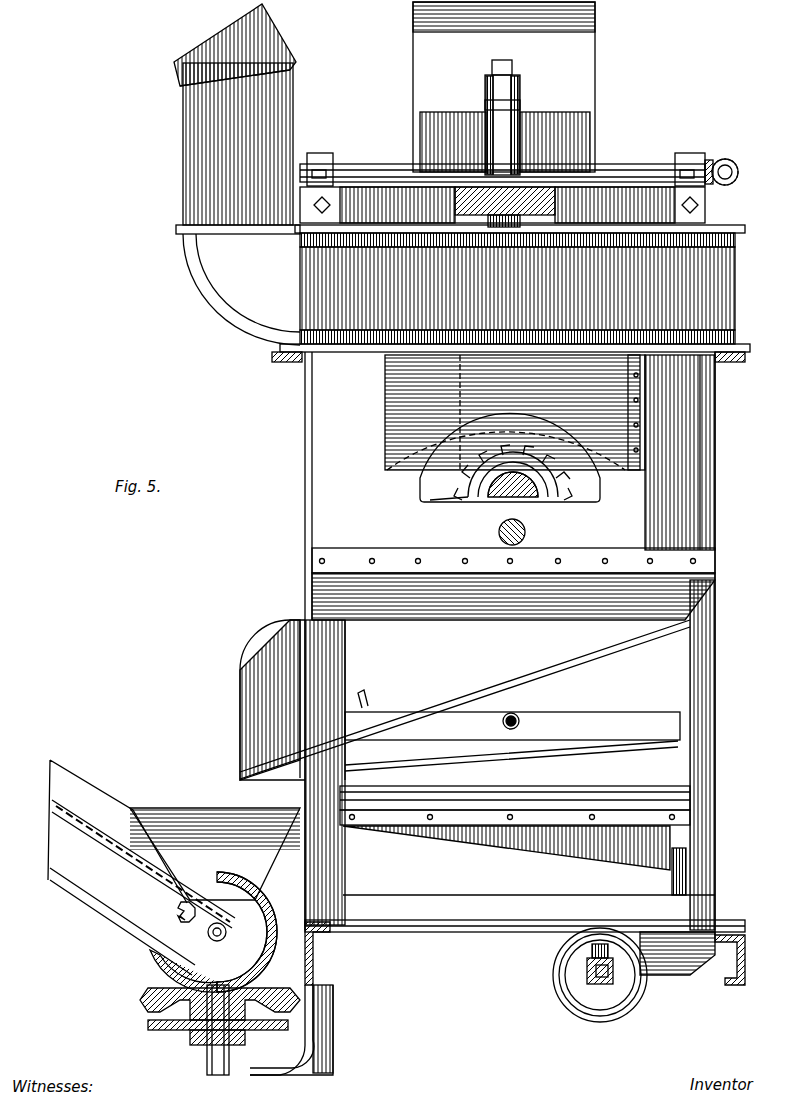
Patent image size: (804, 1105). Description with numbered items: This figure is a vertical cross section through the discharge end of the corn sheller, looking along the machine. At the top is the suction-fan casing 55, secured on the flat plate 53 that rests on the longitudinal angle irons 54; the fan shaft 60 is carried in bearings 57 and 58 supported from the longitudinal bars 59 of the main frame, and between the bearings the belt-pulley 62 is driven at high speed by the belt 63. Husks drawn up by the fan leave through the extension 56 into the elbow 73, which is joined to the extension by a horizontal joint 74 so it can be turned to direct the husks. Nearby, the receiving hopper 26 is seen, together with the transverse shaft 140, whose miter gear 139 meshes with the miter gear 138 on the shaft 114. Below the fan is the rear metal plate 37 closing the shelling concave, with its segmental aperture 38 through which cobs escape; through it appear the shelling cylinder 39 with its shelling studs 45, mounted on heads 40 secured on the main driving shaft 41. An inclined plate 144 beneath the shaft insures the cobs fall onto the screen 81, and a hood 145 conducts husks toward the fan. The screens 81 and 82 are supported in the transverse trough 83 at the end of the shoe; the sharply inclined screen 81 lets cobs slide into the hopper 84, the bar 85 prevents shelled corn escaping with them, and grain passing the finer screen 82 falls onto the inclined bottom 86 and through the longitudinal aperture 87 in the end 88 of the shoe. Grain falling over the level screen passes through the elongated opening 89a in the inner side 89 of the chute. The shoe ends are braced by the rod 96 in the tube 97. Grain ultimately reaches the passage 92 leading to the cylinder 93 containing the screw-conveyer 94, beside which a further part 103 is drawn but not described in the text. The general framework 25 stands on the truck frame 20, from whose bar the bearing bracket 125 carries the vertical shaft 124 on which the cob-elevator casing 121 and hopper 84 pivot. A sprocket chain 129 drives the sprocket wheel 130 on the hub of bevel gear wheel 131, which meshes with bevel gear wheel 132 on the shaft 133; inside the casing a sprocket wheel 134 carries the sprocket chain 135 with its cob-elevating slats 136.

The truck frame 20 is at (318, 975).
The general framework 25 is at (700, 665).
The receiving hopper 26 is at (418, 60).
The metal plate 37 is at (690, 530).
The segmental aperture 38 is at (600, 488).
The shelling cylinder 39 is at (465, 500).
The heads 40 is at (522, 500).
The main driving shaft 41 is at (498, 534).
The shelling studs 45 is at (545, 478).
The flat plate 53 is at (362, 352).
The longitudinal angle irons 54 is at (282, 362).
The suction-fan casing 55 is at (735, 282).
The extension 56 is at (205, 270).
The bearing 57 is at (503, 227).
The bearing 58 is at (520, 94).
The longitudinal bars 59 is at (458, 225).
The fan shaft 60 is at (513, 66).
The belt-pulley 62 is at (522, 108).
The belt 63 is at (590, 138).
The elbow 73 is at (183, 168).
The horizontal joint 74 is at (178, 228).
The screen 81 is at (432, 702).
The finer screen 82 is at (400, 762).
The transverse trough 83 is at (282, 625).
The hopper 84 is at (208, 802).
The bar 85 is at (364, 700).
The inclined bottom 86 is at (640, 792).
The longitudinal aperture 87 is at (580, 792).
The end of shoe 88 is at (590, 842).
The inner side of chute 89 is at (424, 700).
The elongated opening 89a is at (600, 712).
The passage 92 is at (655, 940).
The cylinder 93 is at (638, 986).
The screw-conveyer 94 is at (582, 972).
The rod 96 is at (516, 709).
The tube 97 is at (518, 718).
The axle block 103 is at (590, 985).
The shaft 114 is at (739, 170).
The cob-elevator casing 121 is at (88, 790).
The vertical shaft 124 is at (218, 1070).
The bearing bracket 125 is at (300, 1068).
The sprocket chain 129 is at (150, 1026).
The sprocket wheel 130 is at (192, 1036).
The bevel gear wheel 131 is at (148, 1006).
The bevel gear wheel 132 is at (268, 892).
The shaft 133 is at (220, 920).
The sprocket wheel 134 is at (180, 915).
The sprocket chain 135 is at (72, 890).
The cob-elevating slats 136 is at (92, 898).
The miter gear 138 is at (727, 158).
The miter gear 139 is at (708, 160).
The transverse shaft 140 is at (362, 165).
The inclined plate 144 is at (612, 585).
The hood 145 is at (385, 414).